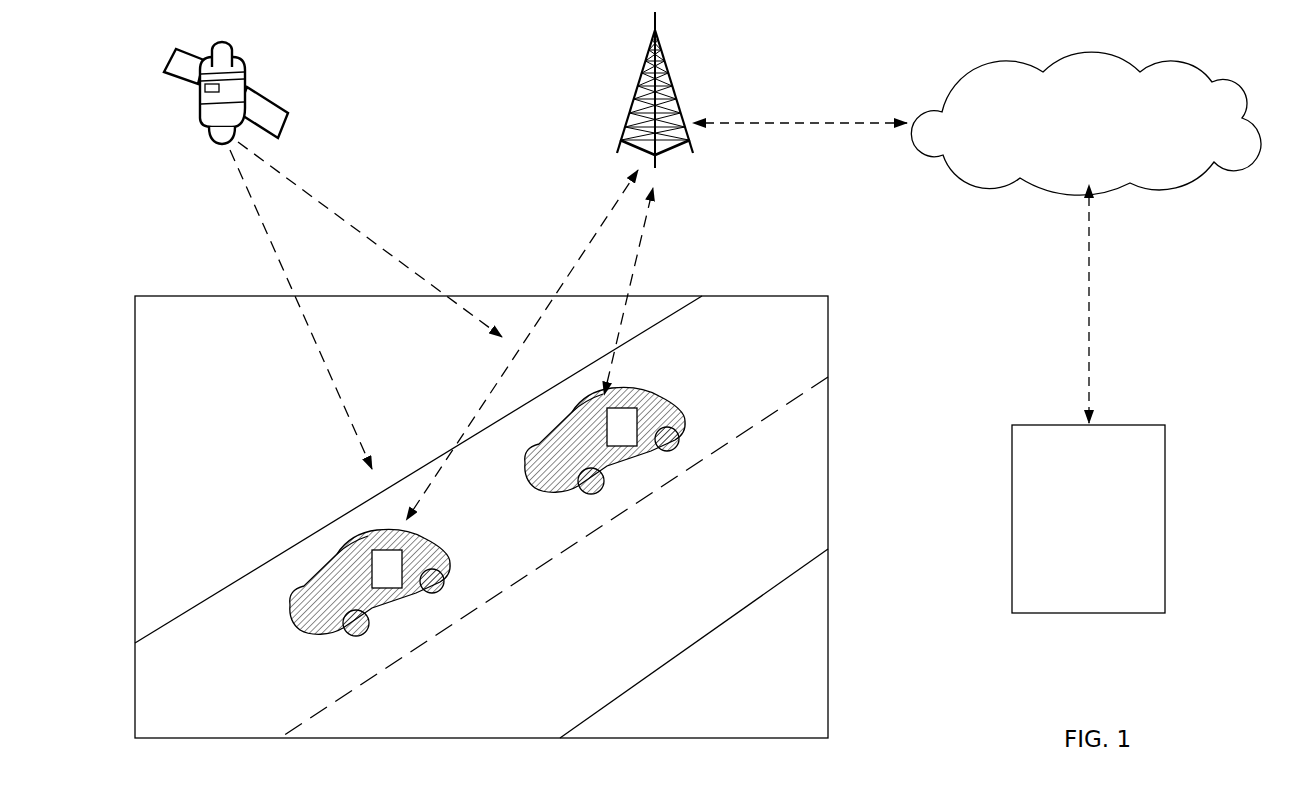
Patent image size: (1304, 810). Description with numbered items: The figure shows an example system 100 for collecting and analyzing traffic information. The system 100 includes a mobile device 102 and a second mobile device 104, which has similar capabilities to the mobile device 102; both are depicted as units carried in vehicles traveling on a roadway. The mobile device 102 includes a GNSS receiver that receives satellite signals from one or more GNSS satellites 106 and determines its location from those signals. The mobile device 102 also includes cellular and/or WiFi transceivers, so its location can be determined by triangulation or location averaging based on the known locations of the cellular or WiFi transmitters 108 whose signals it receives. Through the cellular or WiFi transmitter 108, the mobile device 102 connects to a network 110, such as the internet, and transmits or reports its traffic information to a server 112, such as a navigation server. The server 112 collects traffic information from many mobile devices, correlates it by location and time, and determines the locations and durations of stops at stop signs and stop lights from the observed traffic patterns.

The system 100 is at (1224, 313).
The mobile device 102 is at (388, 570).
The mobile device 104 is at (623, 428).
The GNSS satellite 106 is at (243, 88).
The cellular or WiFi transmitter 108 is at (631, 115).
The network 110 is at (1086, 123).
The server 112 is at (1088, 519).